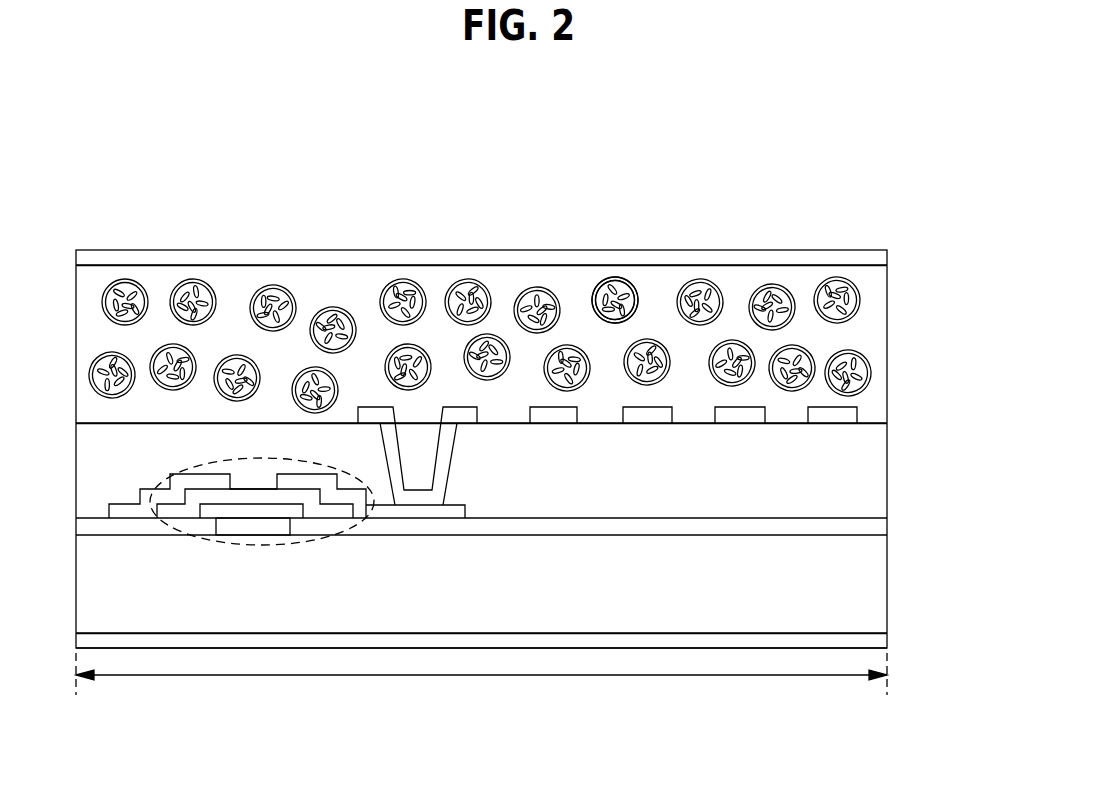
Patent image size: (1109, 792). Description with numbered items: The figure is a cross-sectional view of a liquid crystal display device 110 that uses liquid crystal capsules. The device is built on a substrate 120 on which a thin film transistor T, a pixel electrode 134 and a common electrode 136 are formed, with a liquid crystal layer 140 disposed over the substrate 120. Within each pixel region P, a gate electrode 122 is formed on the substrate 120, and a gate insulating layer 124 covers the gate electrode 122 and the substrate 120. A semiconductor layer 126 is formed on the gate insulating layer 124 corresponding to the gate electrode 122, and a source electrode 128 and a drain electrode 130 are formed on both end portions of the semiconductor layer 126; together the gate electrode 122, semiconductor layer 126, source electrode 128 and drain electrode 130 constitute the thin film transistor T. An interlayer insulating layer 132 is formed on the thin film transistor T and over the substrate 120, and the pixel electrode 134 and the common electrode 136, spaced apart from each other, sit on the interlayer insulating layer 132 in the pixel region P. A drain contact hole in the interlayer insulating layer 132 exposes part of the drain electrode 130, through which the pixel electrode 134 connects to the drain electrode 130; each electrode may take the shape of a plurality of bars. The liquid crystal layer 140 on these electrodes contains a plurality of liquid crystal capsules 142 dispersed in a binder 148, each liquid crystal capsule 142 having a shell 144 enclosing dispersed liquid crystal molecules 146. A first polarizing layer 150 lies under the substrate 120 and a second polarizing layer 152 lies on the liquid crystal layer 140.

The liquid crystal display device 110 is at (527, 152).
The substrate 120 is at (878, 624).
The gate electrode 122 is at (250, 525).
The gate insulating layer 124 is at (488, 527).
The semiconductor layer 126 is at (328, 515).
The source electrode 128 is at (128, 510).
The drain electrode 130 is at (395, 512).
The interlayer insulating layer 132 is at (558, 502).
The pixel electrode 134 is at (645, 415).
The common electrode 136 is at (740, 415).
The liquid crystal layer 140 is at (515, 289).
The liquid crystal capsule 142 is at (663, 193).
The shell 144 is at (600, 278).
The liquid crystal molecules 146 is at (630, 279).
The binder 148 is at (797, 277).
The first polarizing layer 150 is at (877, 643).
The second polarizing layer 152 is at (877, 258).
The thin film transistor T is at (234, 537).
The pixel region P is at (481, 683).